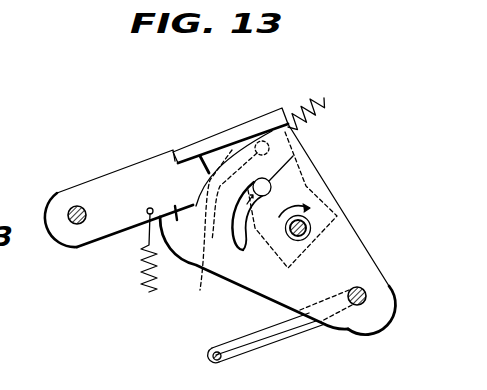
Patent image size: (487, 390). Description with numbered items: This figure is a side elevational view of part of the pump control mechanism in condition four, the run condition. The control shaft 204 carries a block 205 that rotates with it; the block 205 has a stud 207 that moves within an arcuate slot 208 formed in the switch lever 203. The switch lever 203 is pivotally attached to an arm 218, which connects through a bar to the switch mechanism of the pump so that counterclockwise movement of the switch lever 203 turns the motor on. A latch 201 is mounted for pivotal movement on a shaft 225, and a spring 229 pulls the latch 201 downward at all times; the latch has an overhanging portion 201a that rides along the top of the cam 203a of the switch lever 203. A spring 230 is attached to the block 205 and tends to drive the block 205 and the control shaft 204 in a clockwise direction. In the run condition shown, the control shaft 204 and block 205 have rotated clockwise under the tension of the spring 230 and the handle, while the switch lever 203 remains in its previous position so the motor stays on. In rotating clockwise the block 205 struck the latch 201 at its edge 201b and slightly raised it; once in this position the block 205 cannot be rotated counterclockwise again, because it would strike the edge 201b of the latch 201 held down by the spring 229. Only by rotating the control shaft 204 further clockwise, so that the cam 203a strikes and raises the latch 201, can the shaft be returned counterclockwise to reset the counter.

The latch 201 is at (100, 185).
The overhanging portion 201a is at (241, 130).
The edge 201b is at (212, 233).
The switch lever 203 is at (384, 320).
The cam 203a is at (176, 213).
The control shaft 204 is at (310, 222).
The block 205 is at (340, 217).
The stud 207 is at (293, 156).
The arcuate slot 208 is at (243, 250).
The arm 218 is at (250, 338).
The shaft 225 is at (70, 210).
The spring 229 is at (140, 263).
The spring 230 is at (312, 103).